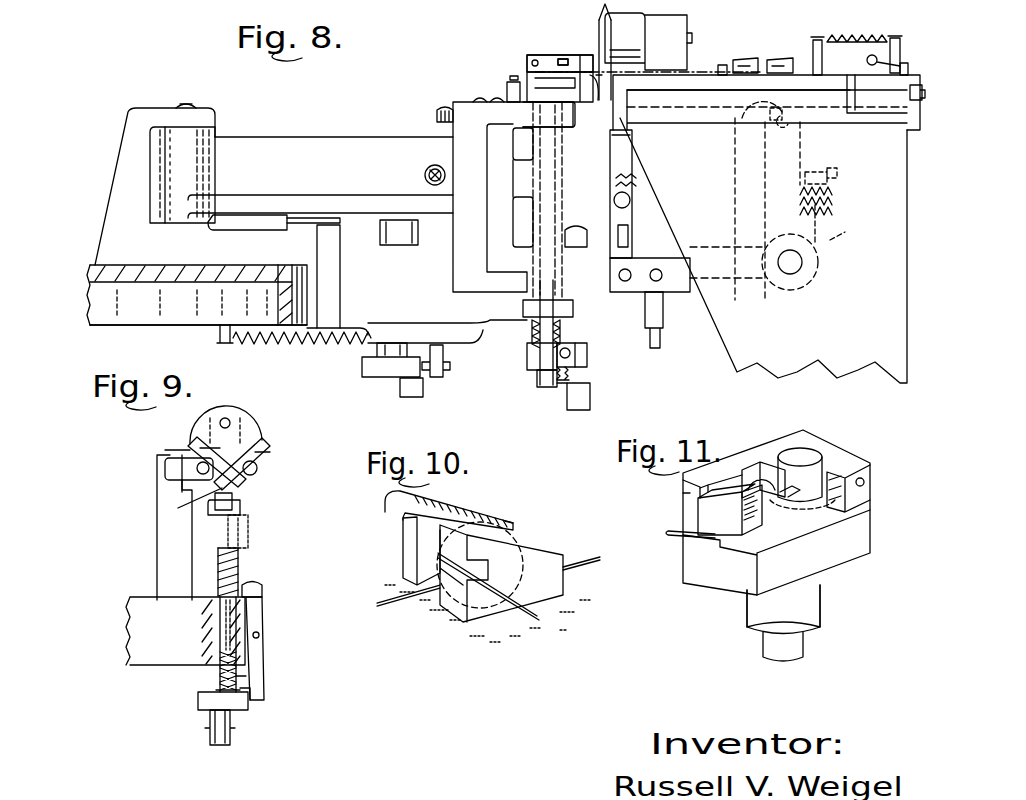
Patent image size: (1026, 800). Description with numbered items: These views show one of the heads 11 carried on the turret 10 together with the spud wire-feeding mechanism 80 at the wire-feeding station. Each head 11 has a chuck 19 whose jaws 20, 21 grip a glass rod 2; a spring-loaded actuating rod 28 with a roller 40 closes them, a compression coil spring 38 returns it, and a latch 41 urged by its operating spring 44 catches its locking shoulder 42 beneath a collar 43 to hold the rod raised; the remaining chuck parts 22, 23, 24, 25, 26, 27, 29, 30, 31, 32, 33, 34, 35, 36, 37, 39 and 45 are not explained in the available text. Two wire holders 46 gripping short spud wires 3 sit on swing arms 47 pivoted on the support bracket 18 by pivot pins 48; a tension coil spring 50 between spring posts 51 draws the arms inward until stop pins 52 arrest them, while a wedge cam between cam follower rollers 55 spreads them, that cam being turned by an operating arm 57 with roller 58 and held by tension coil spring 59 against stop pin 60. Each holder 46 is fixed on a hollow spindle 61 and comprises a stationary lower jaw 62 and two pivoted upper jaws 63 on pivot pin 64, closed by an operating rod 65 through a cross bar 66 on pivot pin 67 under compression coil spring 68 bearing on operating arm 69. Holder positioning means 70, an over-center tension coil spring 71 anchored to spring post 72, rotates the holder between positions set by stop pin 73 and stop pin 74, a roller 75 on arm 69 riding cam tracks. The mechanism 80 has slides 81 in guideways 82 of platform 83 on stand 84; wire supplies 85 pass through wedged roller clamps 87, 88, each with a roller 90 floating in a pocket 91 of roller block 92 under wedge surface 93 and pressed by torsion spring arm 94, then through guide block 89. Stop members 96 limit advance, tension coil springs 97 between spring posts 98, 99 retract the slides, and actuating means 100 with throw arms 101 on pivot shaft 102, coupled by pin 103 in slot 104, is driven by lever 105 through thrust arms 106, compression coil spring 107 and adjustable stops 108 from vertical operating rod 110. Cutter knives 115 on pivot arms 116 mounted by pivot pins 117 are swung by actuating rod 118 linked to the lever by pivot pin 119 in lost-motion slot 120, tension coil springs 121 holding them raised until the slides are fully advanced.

In FIG. 9, the glass rod 2 is at (230, 418).
In FIG. 8, the spud wire 3 is at (608, 68).
In FIG. 11, the spud wire 3 is at (668, 533).
In FIG. 8, the turret 10 is at (135, 320).
In FIG. 8, the head 11 is at (446, 80).
In FIG. 8, the support bracket 18 is at (466, 333).
In FIG. 9, the chuck 19 is at (270, 472).
In FIG. 9, the jaw 20 is at (268, 450).
In FIG. 9, the jaw 21 is at (192, 442).
In FIG. 9, the pivot block 22 is at (190, 490).
In FIG. 9, the pin 23 is at (188, 447).
In FIG. 8, the post 24 is at (505, 145).
In FIG. 9, the post 24 is at (158, 556).
In FIG. 9, the pivot 25 is at (196, 467).
In FIG. 9, the pivot 26 is at (268, 476).
In FIG. 9, the pin 27 is at (265, 460).
In FIG. 9, the actuating rod 28 is at (244, 570).
In FIG. 9, the plate 29 is at (215, 590).
In FIG. 9, the pin 30 is at (240, 682).
In FIG. 9, the plunger 31 is at (218, 602).
In FIG. 9, the rod 32 is at (220, 622).
In FIG. 9, the stud 33 is at (238, 485).
In FIG. 9, the link 34 is at (178, 508).
In FIG. 9, the spring 35 is at (218, 652).
In FIG. 9, the collar 36 is at (250, 536).
In FIG. 9, the block 37 is at (242, 510).
In FIG. 9, the compression coil spring 38 is at (246, 556).
In FIG. 9, the washer 39 is at (216, 680).
In FIG. 9, the roller 40 is at (218, 745).
In FIG. 9, the latch 41 is at (258, 650).
In FIG. 9, the locking shoulder 42 is at (250, 686).
In FIG. 9, the collar 43 is at (240, 706).
In FIG. 9, the operating spring 44 is at (258, 612).
In FIG. 8, the cap 45 is at (598, 222).
In FIG. 9, the cap 45 is at (262, 590).
In FIG. 8, the wire holder 46 is at (521, 52).
In FIG. 11, the wire holder 46 is at (672, 496).
In FIG. 8, the swing arm 47 is at (300, 137).
In FIG. 8, the pivot pin 48 is at (197, 104).
In FIG. 8, the tension coil spring 50 is at (437, 114).
In FIG. 8, the spring post 51 is at (470, 100).
In FIG. 8, the stop pin 52 is at (430, 168).
In FIG. 8, the cam follower roller 55 is at (418, 232).
In FIG. 8, the operating arm 57 is at (392, 378).
In FIG. 8, the roller 58 is at (412, 400).
In FIG. 8, the tension coil spring 59 is at (290, 346).
In FIG. 8, the stop pin 60 is at (438, 380).
In FIG. 8, the hollow supporting spindle 61 is at (556, 192).
In FIG. 11, the hollow supporting spindle 61 is at (748, 605).
In FIG. 8, the stationary lower jaw 62 is at (550, 90).
In FIG. 11, the stationary lower jaw 62 is at (688, 565).
In FIG. 8, the pivoted upper jaw 63 is at (552, 58).
In FIG. 11, the pivoted upper jaw 63 is at (700, 518).
In FIG. 11, the pivot pin 64 is at (866, 480).
In FIG. 8, the operating rod 65 is at (570, 66).
In FIG. 11, the operating rod 65 is at (800, 457).
In FIG. 11, the cross bar 66 is at (750, 470).
In FIG. 11, the pivot pin 67 is at (700, 482).
In FIG. 8, the compression coil spring 68 is at (572, 330).
In FIG. 8, the operating arm 69 is at (587, 355).
In FIG. 8, the holder positioning means 70 is at (560, 402).
In FIG. 8, the tension coil spring 71 is at (548, 392).
In FIG. 8, the spring post 72 is at (530, 358).
In FIG. 8, the stop pin 73 is at (570, 365).
In FIG. 8, the stop pin 74 is at (515, 80).
In FIG. 8, the roller 75 is at (590, 402).
In FIG. 8, the wire-feeding mechanism 80 is at (770, 60).
In FIG. 8, the wire-carrying slide 81 is at (703, 75).
In FIG. 8, the guideway 82 is at (738, 45).
In FIG. 8, the top platform 83 is at (818, 140).
In FIG. 8, the stationary stand 84 is at (850, 372).
In FIG. 8, the wire supply 85 is at (860, 80).
In FIG. 10, the wire supply 85 is at (578, 556).
In FIG. 8, the wire clamp 87 is at (905, 62).
In FIG. 10, the wire clamp 87 is at (518, 508).
In FIG. 8, the wire clamp 88 is at (750, 60).
In FIG. 8, the guide block 89 is at (612, 85).
In FIG. 10, the roller 90 is at (520, 565).
In FIG. 10, the pocket 91 is at (425, 547).
In FIG. 10, the roller block 92 is at (548, 588).
In FIG. 10, the wedge surface 93 is at (430, 510).
In FIG. 10, the torsion spring arm 94 is at (500, 606).
In FIG. 8, the adjustable stop member 96 is at (897, 142).
In FIG. 8, the tension coil spring 97 is at (838, 40).
In FIG. 8, the spring post 98 is at (813, 50).
In FIG. 8, the spring post 99 is at (896, 36).
In FIG. 8, the actuating means 100 is at (680, 300).
In FIG. 8, the throw arm 101 is at (765, 185).
In FIG. 8, the pivot shaft 102 is at (795, 268).
In FIG. 8, the pin 103 is at (765, 135).
In FIG. 8, the slot 104 is at (742, 120).
In FIG. 8, the lever 105 is at (678, 250).
In FIG. 8, the thrust arm 106 is at (832, 210).
In FIG. 8, the compression coil spring 107 is at (828, 226).
In FIG. 8, the adjustable stop 108 is at (840, 170).
In FIG. 8, the operating rod 110 is at (662, 345).
In FIG. 8, the cutter knife 115 is at (601, 16).
In FIG. 8, the pivot arm 116 is at (640, 18).
In FIG. 8, the pivot pin 117 is at (695, 36).
In FIG. 8, the actuating rod 118 is at (610, 170).
In FIG. 8, the pivot pin 119 is at (624, 282).
In FIG. 8, the slot 120 is at (628, 236).
In FIG. 8, the tension coil spring 121 is at (630, 195).